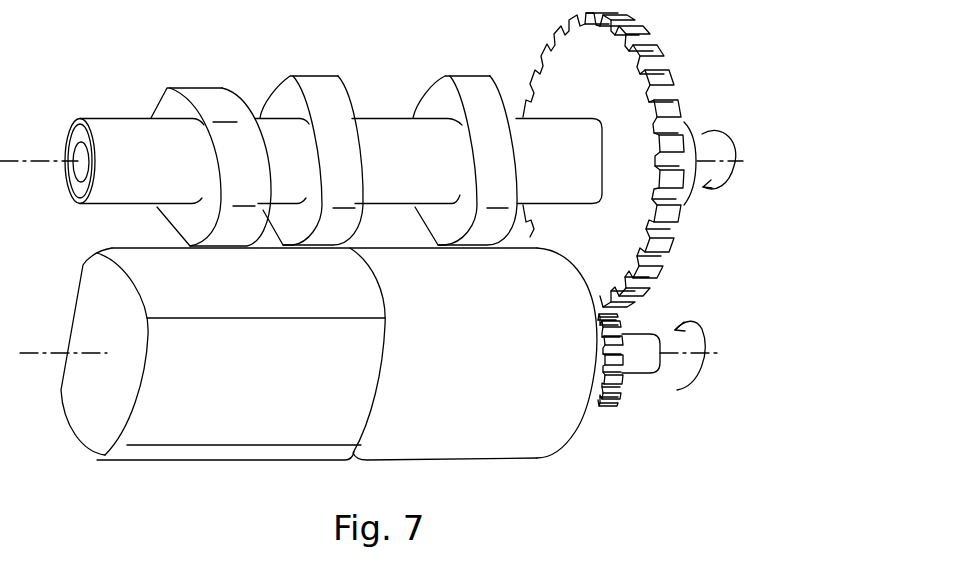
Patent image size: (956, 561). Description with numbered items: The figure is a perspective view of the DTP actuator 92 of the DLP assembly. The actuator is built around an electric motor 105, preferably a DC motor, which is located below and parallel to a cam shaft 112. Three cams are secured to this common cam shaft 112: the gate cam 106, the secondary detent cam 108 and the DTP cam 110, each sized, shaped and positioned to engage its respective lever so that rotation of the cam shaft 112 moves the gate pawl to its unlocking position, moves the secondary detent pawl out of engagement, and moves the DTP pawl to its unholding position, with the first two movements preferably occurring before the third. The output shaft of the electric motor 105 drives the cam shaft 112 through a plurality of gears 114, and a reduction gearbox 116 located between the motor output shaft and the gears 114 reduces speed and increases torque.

The DTP actuator 92 is at (108, 72).
The electric motor 105 is at (113, 249).
The gate cam 106 is at (460, 74).
The secondary detent cam 108 is at (310, 76).
The DTP cam 110 is at (197, 88).
The cam shaft 112 is at (373, 113).
The gears 114 is at (647, 33).
The reduction gearbox 116 is at (480, 460).